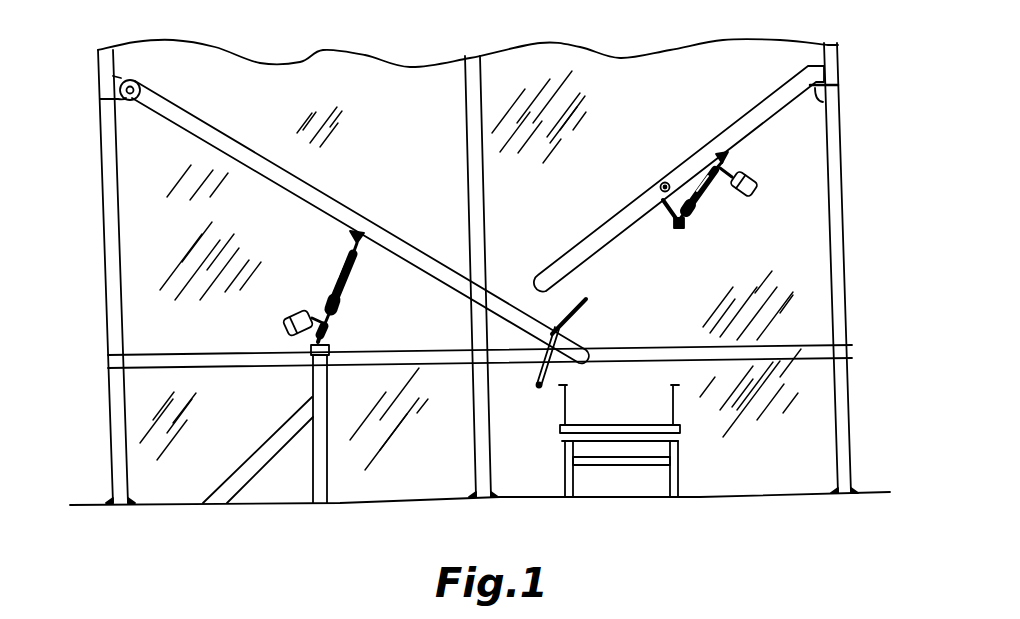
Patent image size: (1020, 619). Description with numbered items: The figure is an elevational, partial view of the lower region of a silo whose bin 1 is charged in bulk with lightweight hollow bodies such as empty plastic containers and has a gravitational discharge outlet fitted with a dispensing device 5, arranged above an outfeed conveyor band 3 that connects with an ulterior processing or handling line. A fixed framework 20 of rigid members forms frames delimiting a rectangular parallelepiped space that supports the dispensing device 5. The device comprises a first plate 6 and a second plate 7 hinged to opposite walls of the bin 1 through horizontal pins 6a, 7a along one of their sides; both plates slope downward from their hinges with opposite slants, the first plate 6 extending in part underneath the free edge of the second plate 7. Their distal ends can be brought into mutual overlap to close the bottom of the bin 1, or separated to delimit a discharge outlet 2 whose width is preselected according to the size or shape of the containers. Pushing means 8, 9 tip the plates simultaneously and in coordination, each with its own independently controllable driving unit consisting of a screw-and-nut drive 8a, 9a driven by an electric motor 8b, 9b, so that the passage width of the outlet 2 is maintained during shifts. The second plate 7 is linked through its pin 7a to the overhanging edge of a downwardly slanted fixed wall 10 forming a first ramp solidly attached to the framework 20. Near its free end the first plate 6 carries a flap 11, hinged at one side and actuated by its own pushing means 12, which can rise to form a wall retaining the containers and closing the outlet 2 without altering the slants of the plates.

The bin 1 is at (383, 105).
The discharge outlet 2 is at (590, 283).
The outfeed conveyor band 3 is at (617, 426).
The dispensing device 5 is at (443, 248).
The first plate 6 is at (332, 197).
The horizontal pin 6a is at (131, 101).
The second plate 7 is at (587, 234).
The horizontal pin 7a is at (660, 184).
The pushing means 8 is at (315, 276).
The screw-and-nut drive 8a is at (352, 282).
The electric motor 8b is at (282, 320).
The pushing means 9 is at (723, 205).
The screw-and-nut drive 9a is at (690, 226).
The electric motor 9b is at (756, 178).
The fixed wall 10 is at (737, 130).
The flap 11 is at (587, 305).
The pushing means 12 is at (539, 387).
The fixed framework 20 is at (118, 432).